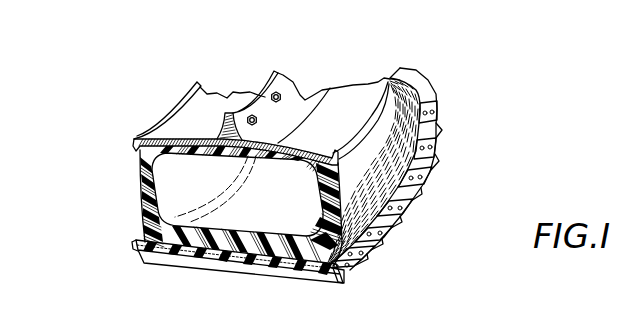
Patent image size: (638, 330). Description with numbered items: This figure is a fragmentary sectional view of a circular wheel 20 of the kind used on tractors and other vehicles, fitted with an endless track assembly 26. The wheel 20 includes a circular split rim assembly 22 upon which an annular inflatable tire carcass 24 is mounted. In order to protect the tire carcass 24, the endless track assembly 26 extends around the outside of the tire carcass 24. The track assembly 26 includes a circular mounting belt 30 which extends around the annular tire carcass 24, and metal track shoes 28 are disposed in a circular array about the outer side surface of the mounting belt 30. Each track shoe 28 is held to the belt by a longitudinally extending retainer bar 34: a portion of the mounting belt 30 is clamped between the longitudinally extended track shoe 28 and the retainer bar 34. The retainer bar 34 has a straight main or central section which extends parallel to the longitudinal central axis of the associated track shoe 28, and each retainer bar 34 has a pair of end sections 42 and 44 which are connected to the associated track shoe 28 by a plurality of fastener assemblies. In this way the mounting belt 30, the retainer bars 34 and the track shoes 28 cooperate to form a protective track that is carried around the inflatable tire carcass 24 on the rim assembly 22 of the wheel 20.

The circular wheel 20 is at (128, 110).
The circular split rim assembly 22 is at (290, 97).
The annular inflatable tire carcass 24 is at (143, 207).
The endless track assembly 26 is at (452, 138).
The metal track shoes 28 is at (412, 222).
The circular mounting belt 30 is at (250, 260).
The retainer bar 34 is at (297, 260).
The end section 42 is at (135, 249).
The end section 44 is at (331, 281).